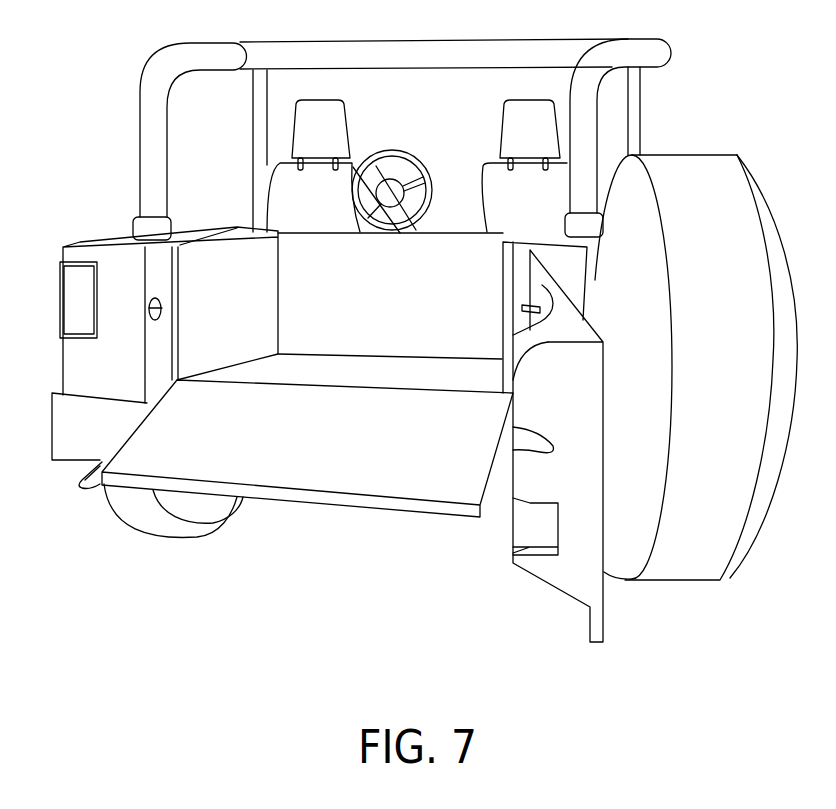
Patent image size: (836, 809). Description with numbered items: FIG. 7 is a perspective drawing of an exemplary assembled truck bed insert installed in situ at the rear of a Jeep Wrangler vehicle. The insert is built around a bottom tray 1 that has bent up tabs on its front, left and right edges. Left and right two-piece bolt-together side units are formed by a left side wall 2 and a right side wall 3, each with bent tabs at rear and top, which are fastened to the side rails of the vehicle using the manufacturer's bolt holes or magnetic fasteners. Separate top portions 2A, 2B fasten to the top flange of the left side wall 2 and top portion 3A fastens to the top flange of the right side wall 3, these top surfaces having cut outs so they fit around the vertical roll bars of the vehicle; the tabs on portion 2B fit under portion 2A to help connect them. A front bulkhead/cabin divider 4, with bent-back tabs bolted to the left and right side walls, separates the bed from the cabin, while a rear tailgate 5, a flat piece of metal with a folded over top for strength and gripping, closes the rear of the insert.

The bottom tray 1 is at (302, 364).
The left side wall 2 is at (216, 285).
The left top portion 2A is at (124, 241).
The left front top portion 2B is at (207, 231).
The right side wall 3 is at (504, 353).
The right top portion 3A is at (551, 229).
The front bulkhead/cabin divider 4 is at (428, 321).
The rear tailgate 5 is at (317, 458).